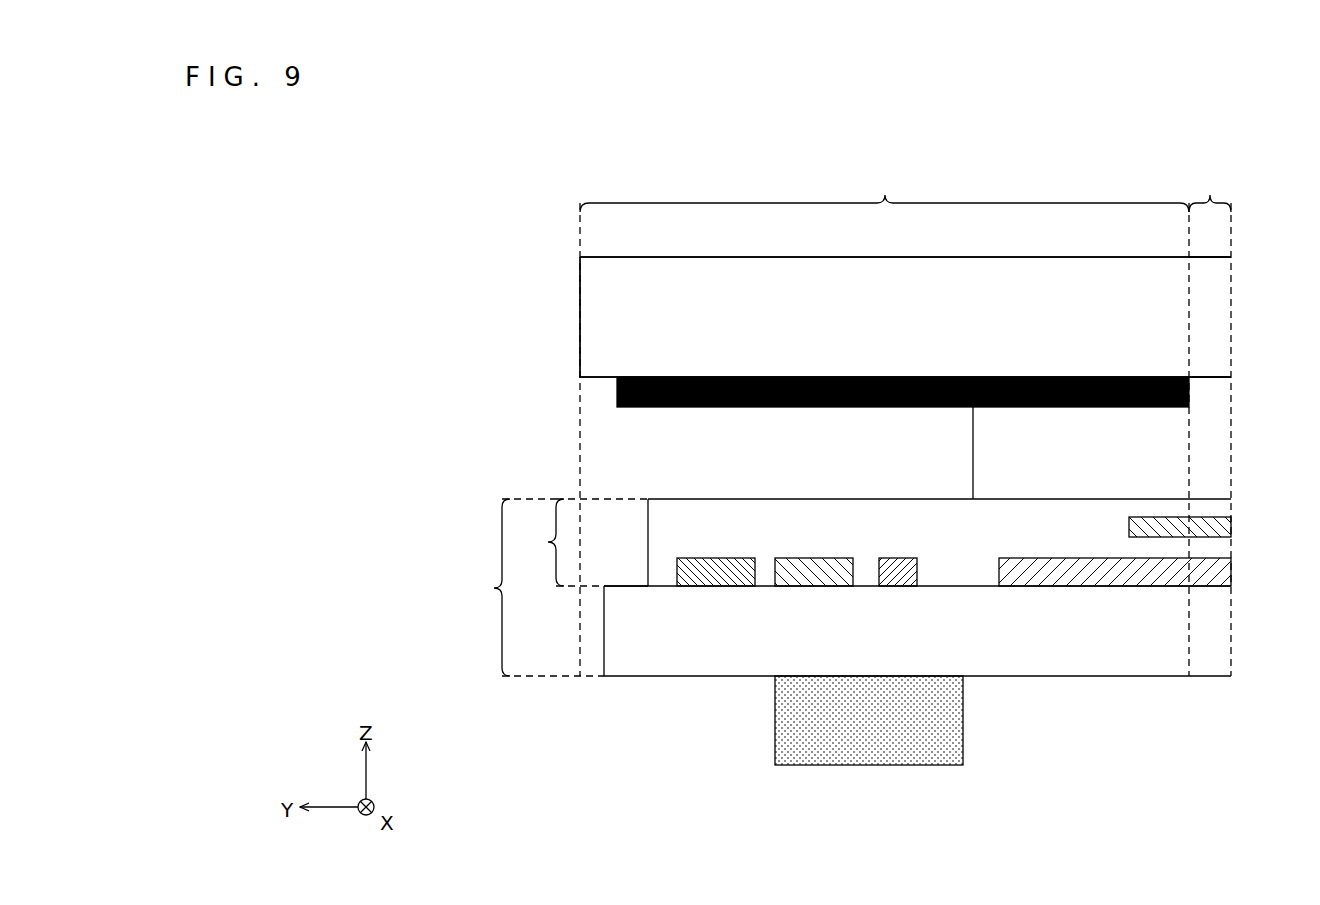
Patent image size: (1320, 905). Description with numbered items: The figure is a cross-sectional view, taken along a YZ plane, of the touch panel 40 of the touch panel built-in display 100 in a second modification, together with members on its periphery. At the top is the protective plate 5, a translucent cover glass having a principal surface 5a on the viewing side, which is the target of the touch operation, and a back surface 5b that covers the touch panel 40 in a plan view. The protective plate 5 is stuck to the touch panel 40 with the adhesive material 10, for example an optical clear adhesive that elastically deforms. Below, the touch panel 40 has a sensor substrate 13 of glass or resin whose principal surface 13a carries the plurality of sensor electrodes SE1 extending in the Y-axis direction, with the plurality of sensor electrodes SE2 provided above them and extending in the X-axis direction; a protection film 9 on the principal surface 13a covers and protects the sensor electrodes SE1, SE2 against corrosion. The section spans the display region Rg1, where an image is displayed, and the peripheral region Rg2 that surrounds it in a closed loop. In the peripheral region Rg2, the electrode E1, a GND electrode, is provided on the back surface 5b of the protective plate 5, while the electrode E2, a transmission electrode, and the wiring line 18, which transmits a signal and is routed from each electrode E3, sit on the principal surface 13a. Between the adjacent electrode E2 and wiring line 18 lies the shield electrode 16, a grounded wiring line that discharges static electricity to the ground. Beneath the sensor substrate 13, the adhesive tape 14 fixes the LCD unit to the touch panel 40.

The touch panel built-in display 100 is at (1183, 140).
The display region Rg1 is at (1209, 191).
The peripheral region Rg2 is at (884, 191).
The protective plate 5 is at (595, 318).
The principal surface 5a is at (1208, 257).
The back surface 5b is at (1208, 377).
The electrode E1 is at (617, 388).
The adhesive material 10 is at (1203, 437).
The protection film 9 is at (591, 542).
The touch panel 40 is at (533, 587).
The sensor substrate 13 is at (1203, 633).
The principal surface 13a is at (663, 590).
The electrode E2 is at (722, 558).
The shield electrode 16 is at (812, 558).
The wiring line 18 is at (898, 558).
The sensor electrode SE1 is at (1222, 577).
The sensor electrode SE2 is at (1220, 530).
The adhesive tape 14 is at (927, 717).